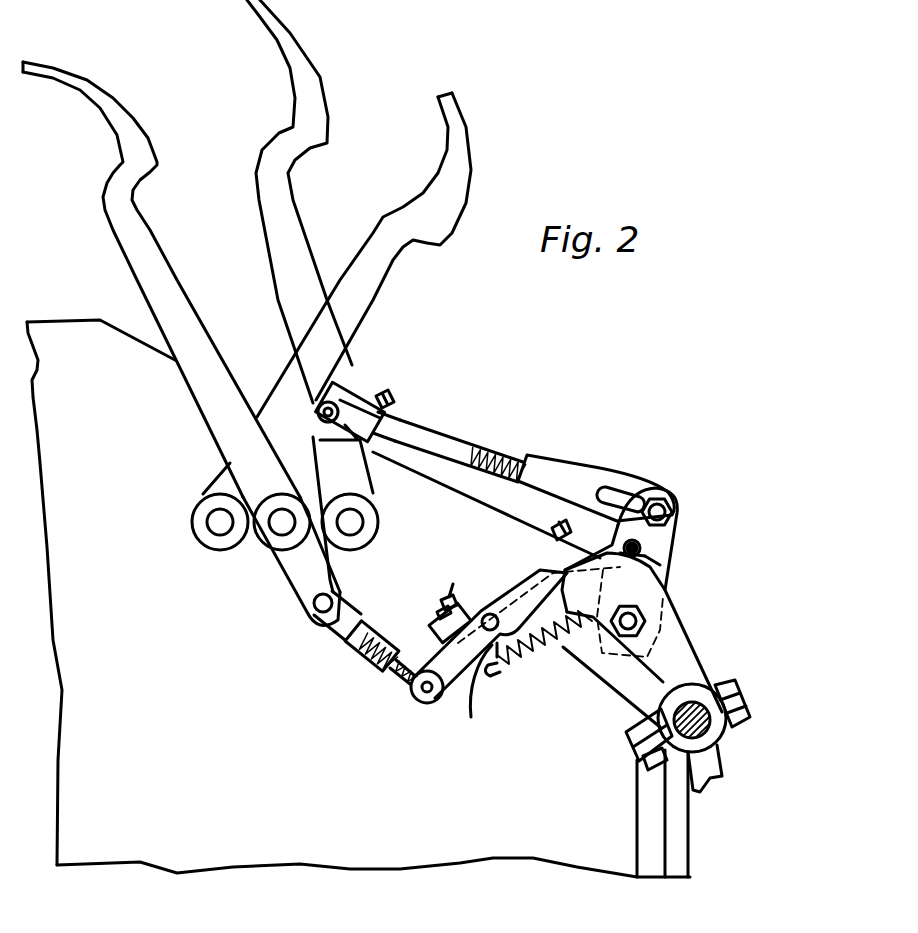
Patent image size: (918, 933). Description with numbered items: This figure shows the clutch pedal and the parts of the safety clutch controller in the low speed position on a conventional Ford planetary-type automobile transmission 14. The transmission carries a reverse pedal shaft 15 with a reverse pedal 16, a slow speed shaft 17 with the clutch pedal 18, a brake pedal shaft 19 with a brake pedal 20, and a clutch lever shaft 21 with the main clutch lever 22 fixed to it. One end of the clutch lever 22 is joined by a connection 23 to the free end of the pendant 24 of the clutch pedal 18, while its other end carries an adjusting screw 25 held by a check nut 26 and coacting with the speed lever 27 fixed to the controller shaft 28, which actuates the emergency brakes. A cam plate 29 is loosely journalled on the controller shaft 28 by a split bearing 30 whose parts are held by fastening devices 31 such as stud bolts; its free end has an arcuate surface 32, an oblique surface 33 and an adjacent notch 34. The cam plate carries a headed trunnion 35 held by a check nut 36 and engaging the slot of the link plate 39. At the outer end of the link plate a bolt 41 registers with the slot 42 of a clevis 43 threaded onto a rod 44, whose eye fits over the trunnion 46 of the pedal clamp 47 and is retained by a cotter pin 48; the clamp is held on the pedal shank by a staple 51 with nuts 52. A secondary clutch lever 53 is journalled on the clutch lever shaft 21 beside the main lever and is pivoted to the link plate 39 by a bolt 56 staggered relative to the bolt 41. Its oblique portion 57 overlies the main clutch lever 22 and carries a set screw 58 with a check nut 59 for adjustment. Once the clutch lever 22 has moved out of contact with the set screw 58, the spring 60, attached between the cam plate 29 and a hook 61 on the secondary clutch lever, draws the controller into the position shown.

The automobile transmission 14 is at (285, 855).
The reverse pedal shaft 15 is at (207, 527).
The reverse pedal 16 is at (345, 330).
The slow speed shaft 17 is at (277, 533).
The clutch pedal 18 is at (183, 303).
The brake pedal shaft 19 is at (357, 528).
The brake pedal 20 is at (340, 382).
The clutch lever shaft 21 is at (473, 690).
The clutch lever 22 is at (452, 690).
The connection 23 is at (375, 662).
The pendant 24 is at (298, 592).
The adjusting screw 25 is at (560, 532).
The check nut 26 is at (560, 560).
The speed lever 27 is at (613, 683).
The controller shaft 28 is at (717, 733).
The cam plate 29 is at (685, 650).
The split bearing 30 is at (660, 738).
The fastening devices 31 is at (665, 758).
The arcuate surface 32 is at (606, 553).
The oblique surface 33 is at (650, 558).
The notch 34 is at (645, 555).
The headed trunnion 35 is at (636, 612).
The check nut 36 is at (650, 622).
The link plate 39 is at (638, 546).
The bolt 41 is at (672, 506).
The slot 42 is at (610, 496).
The clevis 43 is at (576, 470).
The rod 44 is at (485, 456).
The trunnion 46 is at (318, 408).
The pedal clamp 47 is at (380, 387).
The cotter pin 48 is at (358, 436).
The staple 51 is at (316, 433).
The nuts 52 is at (390, 404).
The secondary clutch lever 53 is at (474, 603).
The bolt 56 is at (640, 548).
The oblique portion 57 is at (445, 628).
The set screw 58 is at (452, 605).
The check nut 59 is at (442, 611).
The spring 60 is at (500, 650).
The hook 61 is at (485, 672).